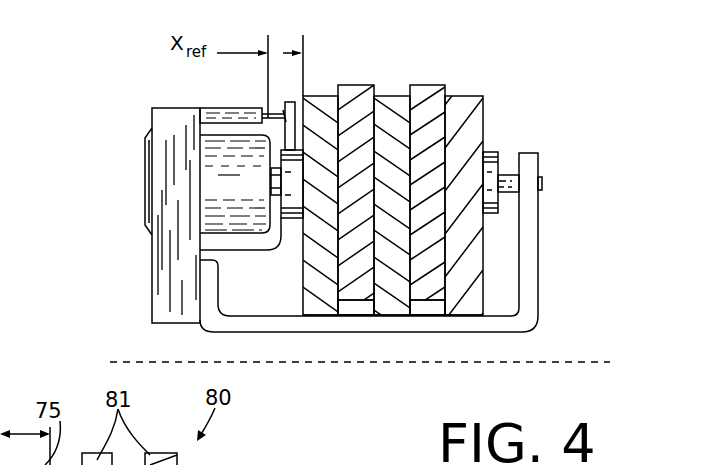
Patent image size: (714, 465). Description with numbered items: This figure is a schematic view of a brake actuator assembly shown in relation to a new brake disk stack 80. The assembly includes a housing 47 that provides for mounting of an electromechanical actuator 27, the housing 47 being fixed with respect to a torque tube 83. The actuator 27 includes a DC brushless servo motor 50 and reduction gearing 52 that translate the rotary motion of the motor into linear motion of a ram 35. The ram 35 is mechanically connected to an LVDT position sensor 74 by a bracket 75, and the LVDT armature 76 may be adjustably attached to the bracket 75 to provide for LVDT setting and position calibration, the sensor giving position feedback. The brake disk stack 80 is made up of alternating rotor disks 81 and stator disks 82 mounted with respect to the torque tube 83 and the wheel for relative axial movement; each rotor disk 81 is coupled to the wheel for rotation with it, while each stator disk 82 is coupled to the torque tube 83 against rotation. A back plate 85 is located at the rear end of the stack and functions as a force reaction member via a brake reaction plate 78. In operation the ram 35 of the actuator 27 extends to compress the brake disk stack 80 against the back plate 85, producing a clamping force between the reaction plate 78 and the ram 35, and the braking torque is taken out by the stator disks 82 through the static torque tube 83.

The electromechanical actuator 27 is at (93, 181).
The ram 35 is at (245, 249).
The housing 47 is at (148, 125).
The DC brushless servo motor 50 is at (93, 181).
The reduction gearing 52 is at (143, 180).
The LVDT position sensor 74 is at (220, 108).
The bracket 75 is at (288, 100).
The LVDT armature 76 is at (283, 110).
The brake reaction plate 78 is at (498, 152).
The brake disk stack 80 is at (405, 189).
The rotor disk 81 is at (420, 86).
The stator disk 82 is at (325, 316).
The torque tube 83 is at (483, 332).
The back plate 85 is at (543, 254).